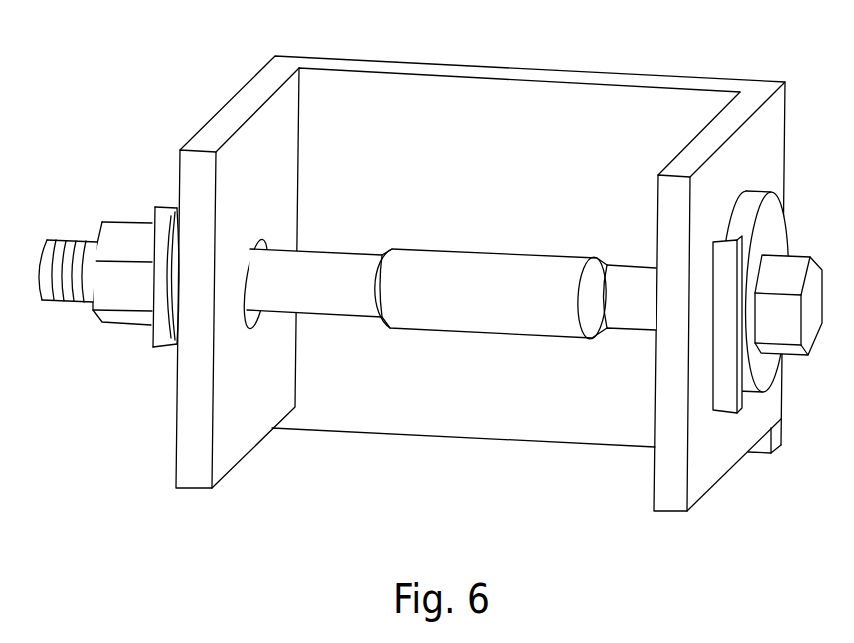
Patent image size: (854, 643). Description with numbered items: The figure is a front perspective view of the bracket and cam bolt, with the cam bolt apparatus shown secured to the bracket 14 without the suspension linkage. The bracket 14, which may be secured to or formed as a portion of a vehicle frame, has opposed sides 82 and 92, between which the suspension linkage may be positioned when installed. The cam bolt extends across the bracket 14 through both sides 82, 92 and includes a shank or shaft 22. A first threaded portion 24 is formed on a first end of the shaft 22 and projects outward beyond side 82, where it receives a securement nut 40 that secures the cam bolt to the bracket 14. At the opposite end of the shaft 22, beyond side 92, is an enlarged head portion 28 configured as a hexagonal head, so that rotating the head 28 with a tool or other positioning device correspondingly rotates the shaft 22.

The bracket 14 is at (482, 95).
The shaft 22 is at (334, 267).
The first threaded portion 24 is at (62, 298).
The enlarged head portion 28 is at (788, 328).
The securement nut 40 is at (153, 290).
The side of bracket 82 is at (189, 473).
The side of bracket 92 is at (670, 495).